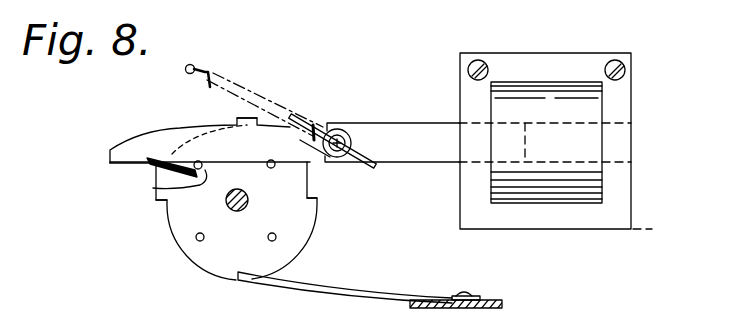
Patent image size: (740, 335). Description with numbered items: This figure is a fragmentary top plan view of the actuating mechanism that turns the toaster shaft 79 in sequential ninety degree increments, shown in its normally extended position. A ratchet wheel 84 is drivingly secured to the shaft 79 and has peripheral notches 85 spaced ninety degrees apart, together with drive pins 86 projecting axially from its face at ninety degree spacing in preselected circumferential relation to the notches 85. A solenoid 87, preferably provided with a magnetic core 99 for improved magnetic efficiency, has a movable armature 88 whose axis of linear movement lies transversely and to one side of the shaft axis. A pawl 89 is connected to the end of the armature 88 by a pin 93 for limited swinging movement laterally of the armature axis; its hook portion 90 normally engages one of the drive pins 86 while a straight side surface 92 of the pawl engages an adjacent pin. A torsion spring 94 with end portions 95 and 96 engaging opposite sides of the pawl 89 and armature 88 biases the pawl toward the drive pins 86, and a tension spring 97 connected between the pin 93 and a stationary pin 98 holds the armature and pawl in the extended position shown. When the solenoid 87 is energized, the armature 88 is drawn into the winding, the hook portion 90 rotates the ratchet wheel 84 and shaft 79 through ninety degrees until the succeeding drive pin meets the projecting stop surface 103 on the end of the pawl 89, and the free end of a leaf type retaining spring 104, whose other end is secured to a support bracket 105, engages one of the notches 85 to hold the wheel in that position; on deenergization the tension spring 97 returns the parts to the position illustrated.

The shaft 79 is at (232, 212).
The ratchet wheel 84 is at (300, 224).
The peripheral notches 85 is at (233, 121).
The drive pins 86 is at (153, 188).
The solenoid 87 is at (547, 86).
The armature 88 is at (387, 130).
The pawl 89 is at (180, 128).
The hook portion 90 is at (167, 156).
The straight side surface 92 is at (253, 161).
The pin 93 is at (338, 129).
The torsion spring 94 is at (320, 151).
The end portion 95 is at (297, 120).
The end portion 96 is at (377, 168).
The tension spring 97 is at (217, 73).
The stationary pin 98 is at (191, 66).
The magnetic core 99 is at (618, 192).
The stop surface 103 is at (114, 163).
The leaf type retaining spring 104 is at (336, 293).
The support bracket 105 is at (455, 303).